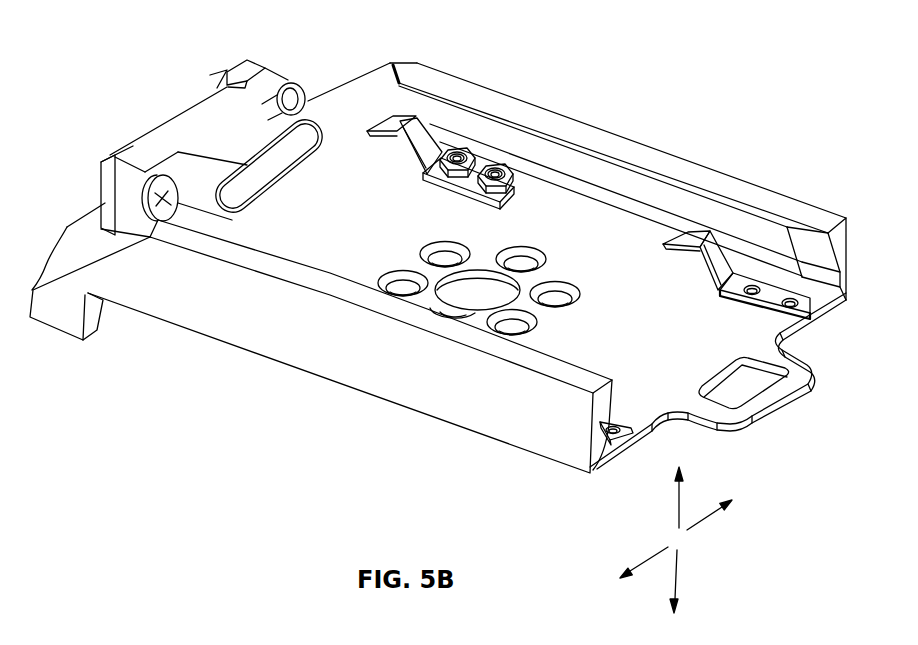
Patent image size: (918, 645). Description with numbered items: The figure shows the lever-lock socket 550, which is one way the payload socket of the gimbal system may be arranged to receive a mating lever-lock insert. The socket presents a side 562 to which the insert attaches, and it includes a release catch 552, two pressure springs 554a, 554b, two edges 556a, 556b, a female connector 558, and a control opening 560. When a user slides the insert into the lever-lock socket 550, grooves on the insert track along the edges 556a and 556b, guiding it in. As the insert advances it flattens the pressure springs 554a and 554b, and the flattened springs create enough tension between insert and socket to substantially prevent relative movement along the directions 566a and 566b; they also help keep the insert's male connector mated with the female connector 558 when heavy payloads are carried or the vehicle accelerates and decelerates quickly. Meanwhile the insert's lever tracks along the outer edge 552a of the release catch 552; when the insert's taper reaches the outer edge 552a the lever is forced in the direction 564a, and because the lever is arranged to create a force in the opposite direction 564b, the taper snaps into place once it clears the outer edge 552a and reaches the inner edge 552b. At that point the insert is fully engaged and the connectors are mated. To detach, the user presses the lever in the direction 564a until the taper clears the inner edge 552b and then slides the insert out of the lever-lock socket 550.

The lever-lock socket 550 is at (128, 38).
The release catch 552 is at (760, 383).
The outer edge 552a is at (765, 415).
The inner edge 552b is at (752, 400).
The pressure spring 554a is at (726, 266).
The pressure spring 554b is at (425, 143).
The edge 556a is at (610, 146).
The edge 556b is at (536, 361).
The female connector 558 is at (180, 117).
The control opening 560 is at (466, 296).
The side 562 is at (332, 246).
The direction 564a is at (680, 497).
The direction 564b is at (678, 568).
The direction 566a is at (652, 562).
The direction 566b is at (700, 527).